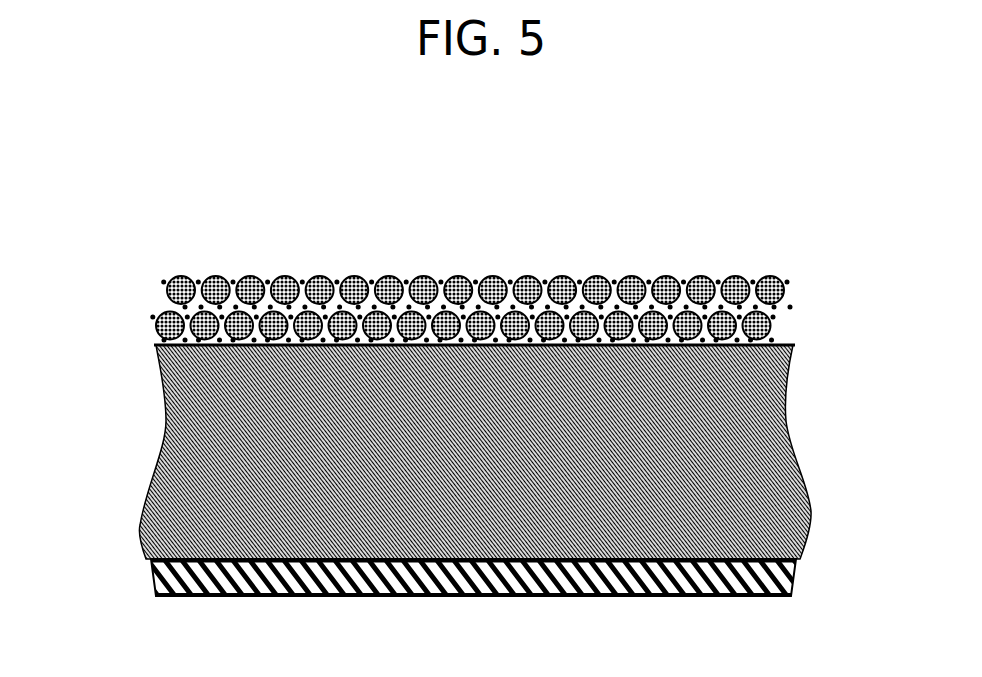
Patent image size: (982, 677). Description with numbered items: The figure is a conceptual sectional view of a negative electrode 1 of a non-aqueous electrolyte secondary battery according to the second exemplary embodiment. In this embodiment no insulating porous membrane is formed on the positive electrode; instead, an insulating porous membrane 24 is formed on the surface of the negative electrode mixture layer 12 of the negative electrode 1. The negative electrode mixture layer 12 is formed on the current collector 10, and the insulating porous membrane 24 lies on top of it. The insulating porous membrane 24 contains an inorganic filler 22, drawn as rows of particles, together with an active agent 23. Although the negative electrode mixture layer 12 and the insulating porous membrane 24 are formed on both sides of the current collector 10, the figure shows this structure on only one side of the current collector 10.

The negative electrode 1 is at (437, 506).
The current collector 10 is at (367, 567).
The negative electrode mixture layer 12 is at (592, 540).
The inorganic filler 22 is at (804, 269).
The active agent 23 is at (785, 338).
The insulating porous membrane 24 is at (521, 288).